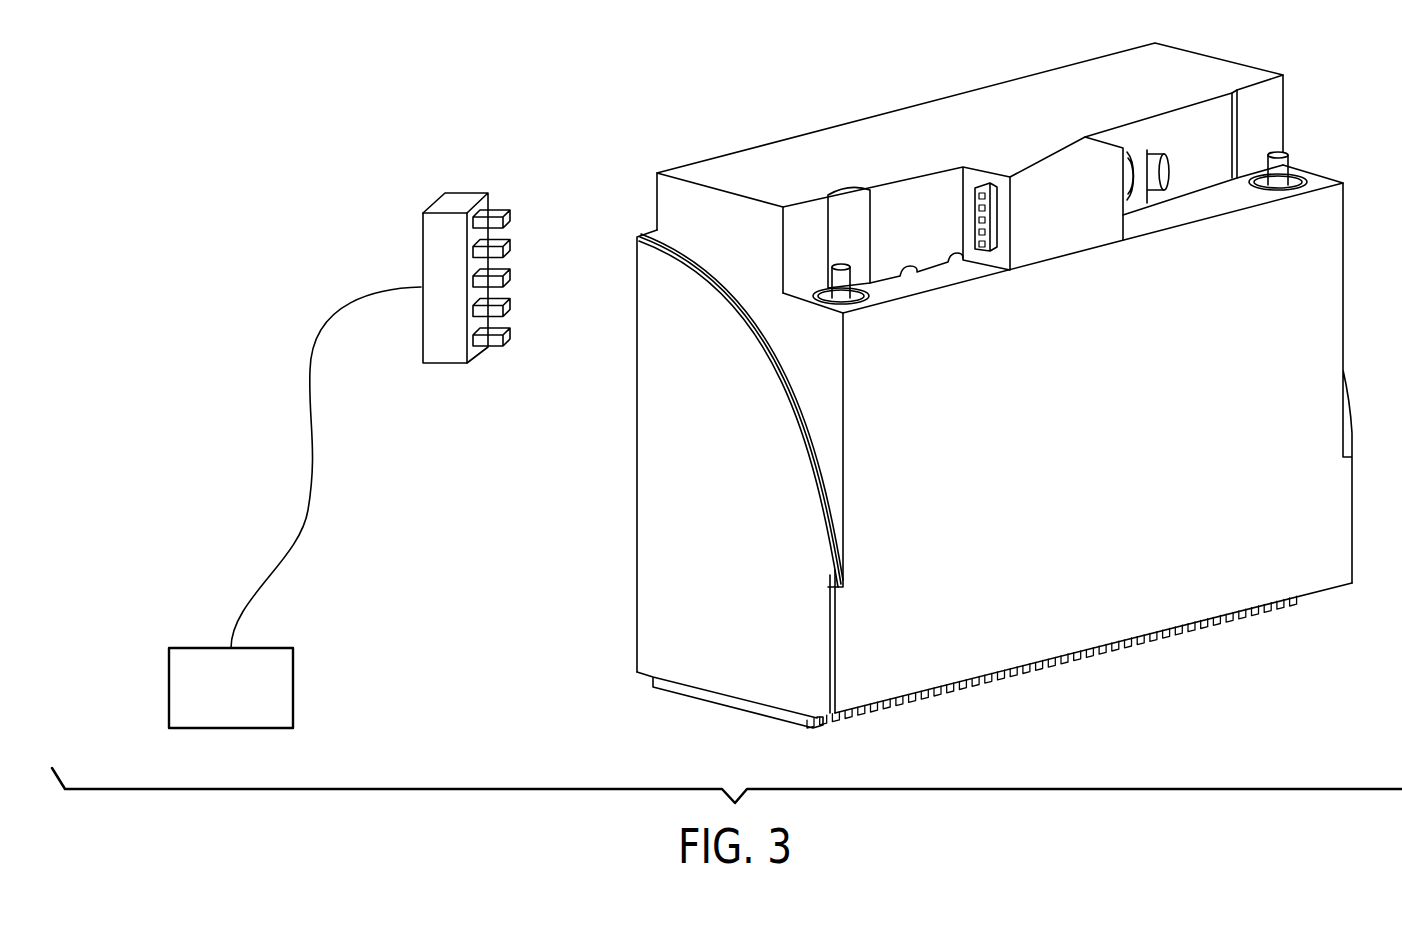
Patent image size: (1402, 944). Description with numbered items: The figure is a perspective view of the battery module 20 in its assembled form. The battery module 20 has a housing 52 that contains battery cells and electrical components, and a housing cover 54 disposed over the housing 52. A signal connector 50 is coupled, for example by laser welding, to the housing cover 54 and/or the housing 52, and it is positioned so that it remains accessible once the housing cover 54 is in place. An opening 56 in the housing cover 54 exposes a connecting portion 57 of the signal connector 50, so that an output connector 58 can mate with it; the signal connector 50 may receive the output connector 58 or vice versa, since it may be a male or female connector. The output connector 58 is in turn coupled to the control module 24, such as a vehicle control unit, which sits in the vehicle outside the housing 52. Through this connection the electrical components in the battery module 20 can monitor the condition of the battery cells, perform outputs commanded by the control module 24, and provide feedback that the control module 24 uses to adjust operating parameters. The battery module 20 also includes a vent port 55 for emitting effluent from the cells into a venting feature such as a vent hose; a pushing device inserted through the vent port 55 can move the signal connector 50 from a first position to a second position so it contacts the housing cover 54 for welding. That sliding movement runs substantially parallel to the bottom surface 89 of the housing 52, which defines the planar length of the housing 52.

The battery module 20 is at (1340, 114).
The control module 24 is at (231, 728).
The signal connector 50 is at (1033, 221).
The housing 52 is at (658, 602).
The housing cover 54 is at (1185, 77).
The vent port 55 is at (1153, 169).
The opening 56 is at (988, 244).
The connecting portion 57 is at (995, 219).
The output connector 58 is at (453, 200).
The bottom surface 89 is at (1083, 674).